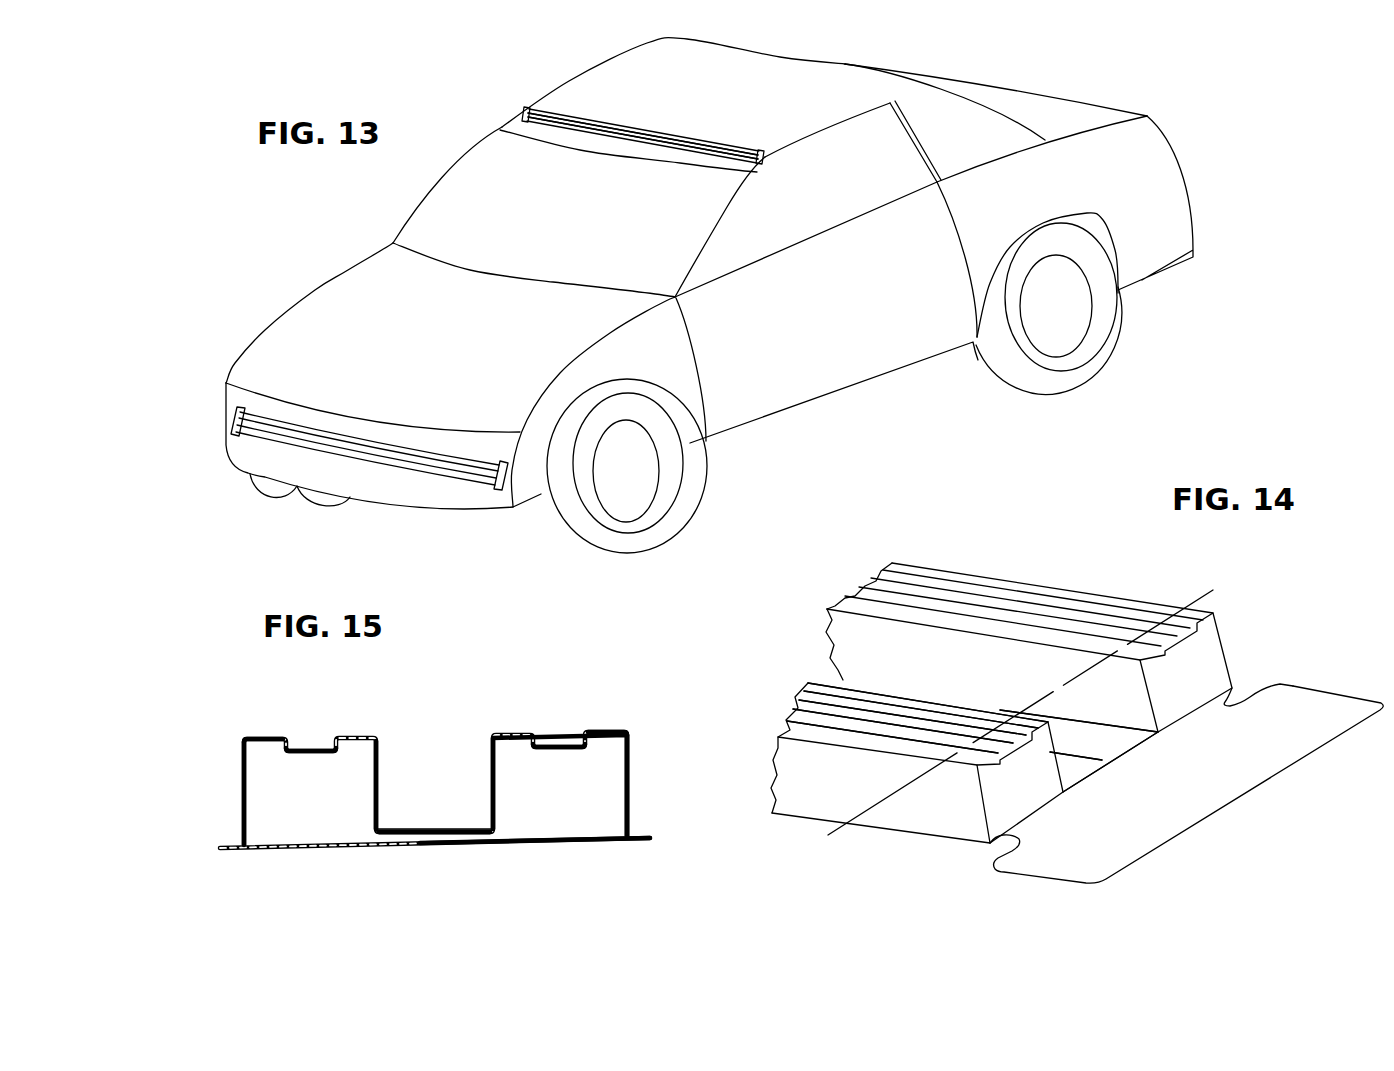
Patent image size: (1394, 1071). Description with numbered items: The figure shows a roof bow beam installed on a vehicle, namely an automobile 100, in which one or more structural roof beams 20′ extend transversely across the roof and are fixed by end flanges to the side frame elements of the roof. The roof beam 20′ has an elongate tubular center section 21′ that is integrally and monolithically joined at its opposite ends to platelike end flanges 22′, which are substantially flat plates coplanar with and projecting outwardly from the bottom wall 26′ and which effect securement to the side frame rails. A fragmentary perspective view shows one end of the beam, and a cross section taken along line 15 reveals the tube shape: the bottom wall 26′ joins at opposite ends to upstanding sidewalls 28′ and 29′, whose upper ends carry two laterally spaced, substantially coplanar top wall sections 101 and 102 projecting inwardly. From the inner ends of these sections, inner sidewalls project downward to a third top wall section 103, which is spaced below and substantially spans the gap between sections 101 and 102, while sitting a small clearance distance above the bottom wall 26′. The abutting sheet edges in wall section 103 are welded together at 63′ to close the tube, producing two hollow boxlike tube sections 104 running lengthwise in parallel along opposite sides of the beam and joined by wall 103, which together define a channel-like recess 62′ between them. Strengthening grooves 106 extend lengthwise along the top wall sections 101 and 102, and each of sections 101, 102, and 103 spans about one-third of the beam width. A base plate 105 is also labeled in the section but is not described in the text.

In FIG. 13, the automobile 100 is at (330, 280).
In FIG. 13, the roof beam 20′ is at (645, 116).
In FIG. 14, the roof beam 20′ is at (1071, 568).
In FIG. 15, the roof beam 20′ is at (568, 712).
In FIG. 13, the tubular center section 21′ is at (690, 140).
In FIG. 14, the tubular center section 21′ is at (956, 574).
In FIG. 13, the end flanges 22′ is at (532, 112).
In FIG. 14, the end flanges 22′ is at (1291, 686).
In FIG. 14, the weld 63′ is at (1095, 760).
In FIG. 15, the weld 63′ is at (435, 828).
In FIG. 14, the section line 15 is at (828, 835).
In FIG. 15, the bottom wall 26′ is at (370, 847).
In FIG. 15, the base plate 105 is at (477, 840).
In FIG. 15, the sidewall 28′ is at (242, 802).
In FIG. 15, the sidewall 29′ is at (632, 785).
In FIG. 15, the top wall section 101 is at (258, 738).
In FIG. 15, the top wall section 102 is at (623, 732).
In FIG. 15, the third top wall section 103 is at (398, 831).
In FIG. 15, the tube sections 104 is at (305, 770).
In FIG. 15, the strengthening grooves 106 is at (543, 745).
In FIG. 15, the channel-like recess 62′ is at (394, 754).